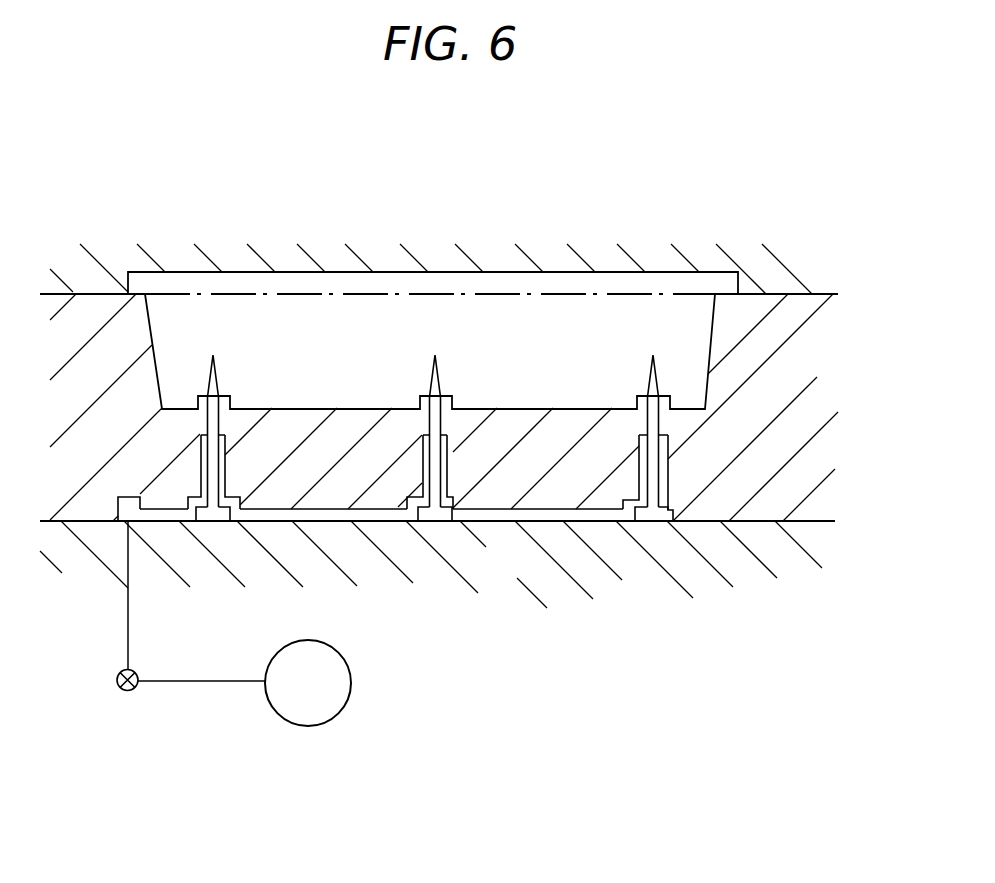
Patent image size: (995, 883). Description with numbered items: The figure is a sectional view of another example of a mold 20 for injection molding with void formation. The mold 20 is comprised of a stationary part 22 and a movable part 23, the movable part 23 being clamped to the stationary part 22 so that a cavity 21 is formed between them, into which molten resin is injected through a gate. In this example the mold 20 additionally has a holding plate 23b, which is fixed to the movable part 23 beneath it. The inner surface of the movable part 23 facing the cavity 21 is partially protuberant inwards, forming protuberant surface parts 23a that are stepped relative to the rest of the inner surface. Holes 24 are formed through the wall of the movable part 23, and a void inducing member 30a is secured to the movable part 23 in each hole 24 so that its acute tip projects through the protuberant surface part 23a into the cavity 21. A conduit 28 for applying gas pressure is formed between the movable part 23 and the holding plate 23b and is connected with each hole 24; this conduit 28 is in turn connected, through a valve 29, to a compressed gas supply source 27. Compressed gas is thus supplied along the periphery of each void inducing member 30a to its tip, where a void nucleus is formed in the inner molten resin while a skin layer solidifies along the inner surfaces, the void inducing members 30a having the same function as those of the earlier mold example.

The mold 20 is at (548, 197).
The cavity 21 is at (358, 350).
The stationary part 22 is at (400, 245).
The movable part 23 is at (787, 424).
The protuberant surface part 23a is at (232, 397).
The holding plate 23b is at (707, 578).
The hole 24 is at (447, 472).
The compressed gas supply source 27 is at (350, 687).
The conduit 28 is at (172, 522).
The valve 29 is at (130, 691).
The void inducing member 30a is at (652, 522).